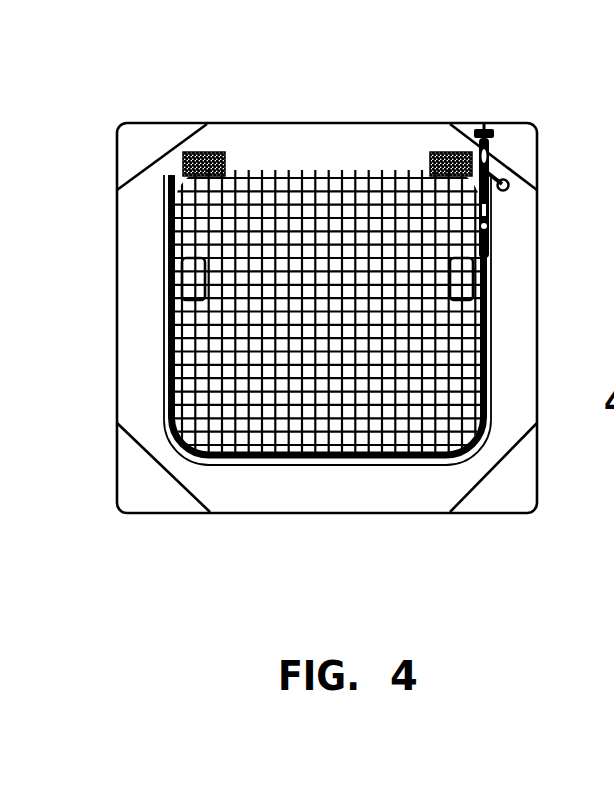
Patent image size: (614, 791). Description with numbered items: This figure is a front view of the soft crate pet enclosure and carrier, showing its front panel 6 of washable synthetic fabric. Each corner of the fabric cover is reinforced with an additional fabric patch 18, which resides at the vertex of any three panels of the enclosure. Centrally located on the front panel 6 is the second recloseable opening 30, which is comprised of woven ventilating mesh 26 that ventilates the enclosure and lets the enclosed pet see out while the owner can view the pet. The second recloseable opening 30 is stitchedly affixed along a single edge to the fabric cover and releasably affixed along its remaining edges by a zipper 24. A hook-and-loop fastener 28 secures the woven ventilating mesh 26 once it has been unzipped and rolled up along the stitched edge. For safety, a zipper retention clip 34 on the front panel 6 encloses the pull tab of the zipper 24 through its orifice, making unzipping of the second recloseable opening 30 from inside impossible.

The front panel 6 is at (312, 495).
The fabric patch 18 is at (520, 142).
The zipper 24 is at (493, 217).
The woven ventilating mesh 26 is at (210, 315).
The hook-and-loop fastener 28 is at (196, 152).
The second recloseable opening 30 is at (164, 402).
The zipper retention clip 34 is at (482, 125).